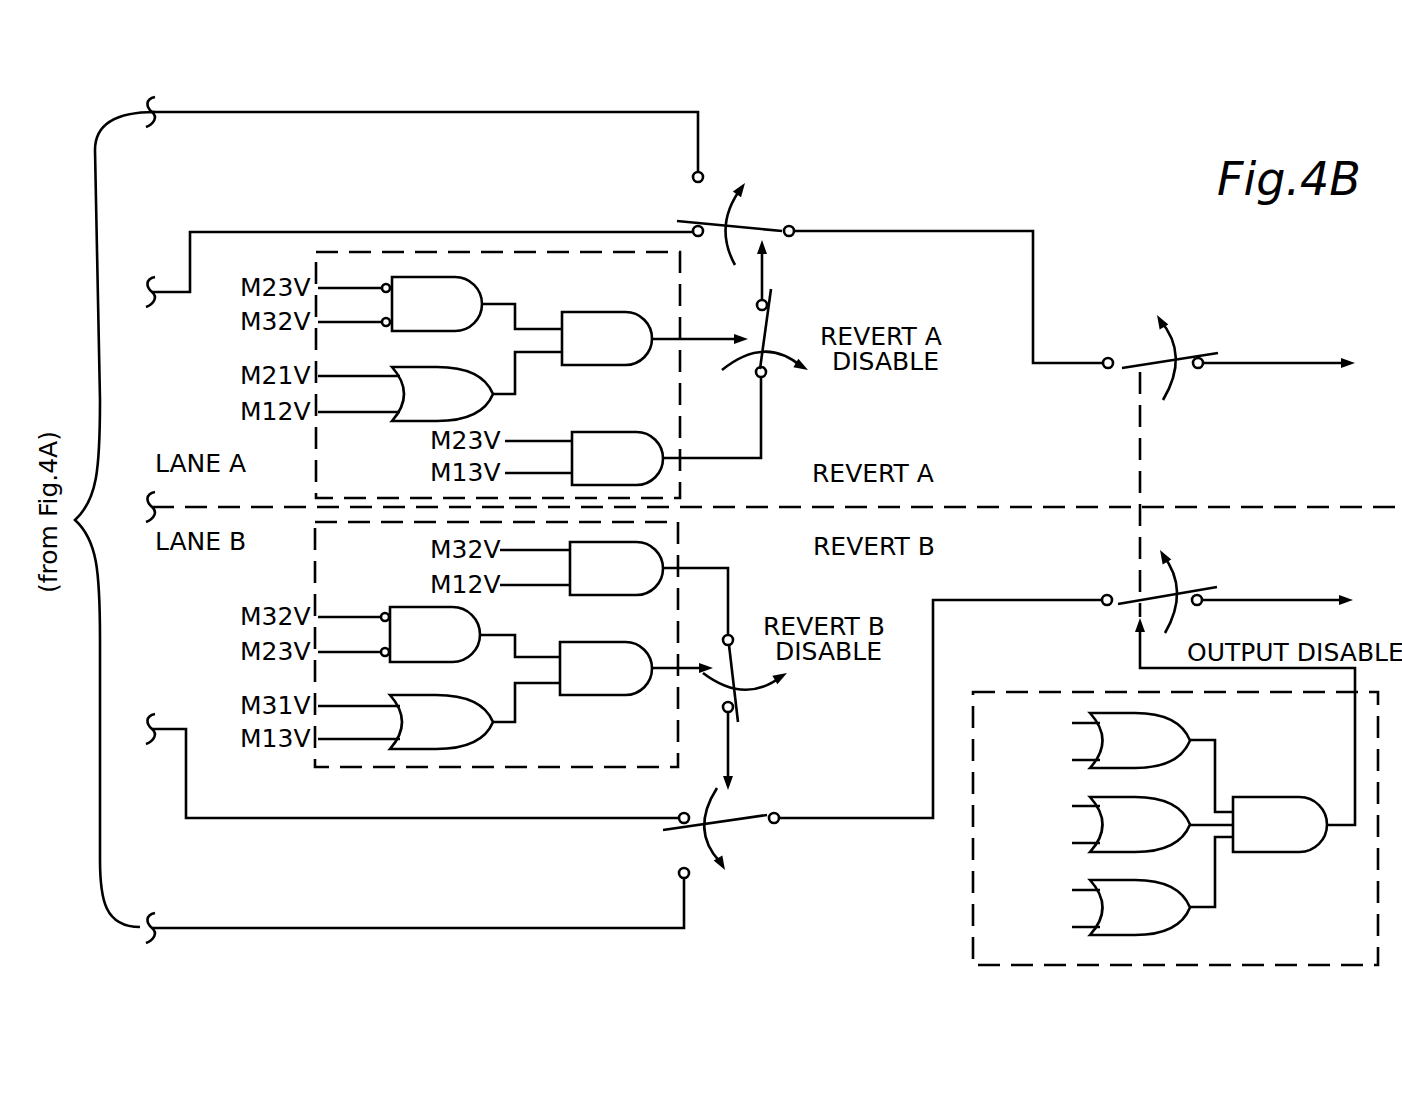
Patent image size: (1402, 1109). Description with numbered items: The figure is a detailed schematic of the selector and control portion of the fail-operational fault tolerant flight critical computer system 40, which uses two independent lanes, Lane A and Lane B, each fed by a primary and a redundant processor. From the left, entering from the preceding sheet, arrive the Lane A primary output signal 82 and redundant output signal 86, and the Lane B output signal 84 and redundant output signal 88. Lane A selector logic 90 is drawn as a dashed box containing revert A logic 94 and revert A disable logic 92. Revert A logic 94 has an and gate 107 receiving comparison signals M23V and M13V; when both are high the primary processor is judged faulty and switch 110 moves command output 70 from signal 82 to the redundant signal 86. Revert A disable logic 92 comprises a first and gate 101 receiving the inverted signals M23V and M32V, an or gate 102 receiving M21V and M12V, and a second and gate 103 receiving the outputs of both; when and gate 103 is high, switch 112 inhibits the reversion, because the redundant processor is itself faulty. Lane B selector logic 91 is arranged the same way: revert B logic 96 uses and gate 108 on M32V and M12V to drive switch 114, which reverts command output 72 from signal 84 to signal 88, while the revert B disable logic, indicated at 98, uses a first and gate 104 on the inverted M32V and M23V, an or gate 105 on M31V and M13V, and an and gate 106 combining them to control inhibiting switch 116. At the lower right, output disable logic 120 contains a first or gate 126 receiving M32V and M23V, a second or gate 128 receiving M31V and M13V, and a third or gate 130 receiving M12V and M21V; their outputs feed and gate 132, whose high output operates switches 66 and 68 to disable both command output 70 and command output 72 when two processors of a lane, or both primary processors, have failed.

The fail-operational fault tolerant flight critical computer system 40 is at (1032, 157).
The switch 66 is at (1195, 334).
The switch 68 is at (1192, 570).
The command output 70 is at (1301, 331).
The command output 72 is at (1300, 572).
The primary output signal 82 is at (205, 232).
The output signal 84 is at (205, 820).
The redundant output signal 86 is at (517, 113).
The redundant output signal 88 is at (420, 928).
The Lane A selector logic 90 is at (377, 252).
The Lane B selector logic 91 is at (372, 767).
The revert A disable logic 92 is at (403, 433).
The revert A logic 94 is at (690, 476).
The revert B logic 96 is at (672, 549).
The lane B revert disable logic 98 is at (592, 630).
The first and gate 101 is at (437, 304).
The or gate 102 is at (442, 394).
The second and gate 103 is at (655, 338).
The first and gate 104 is at (435, 634).
The or gate 105 is at (441, 722).
The and gate 106 is at (636, 668).
The and gate 107 is at (617, 458).
The and gate 108 is at (616, 568).
The switch 110 is at (760, 212).
The switch 112 is at (780, 313).
The switch 114 is at (755, 848).
The switch 116 is at (758, 706).
The output disable logic 120 is at (1117, 799).
The first or gate 126 is at (1140, 740).
The second or gate 128 is at (1140, 824).
The third or gate 130 is at (1140, 907).
The and gate 132 is at (1245, 735).